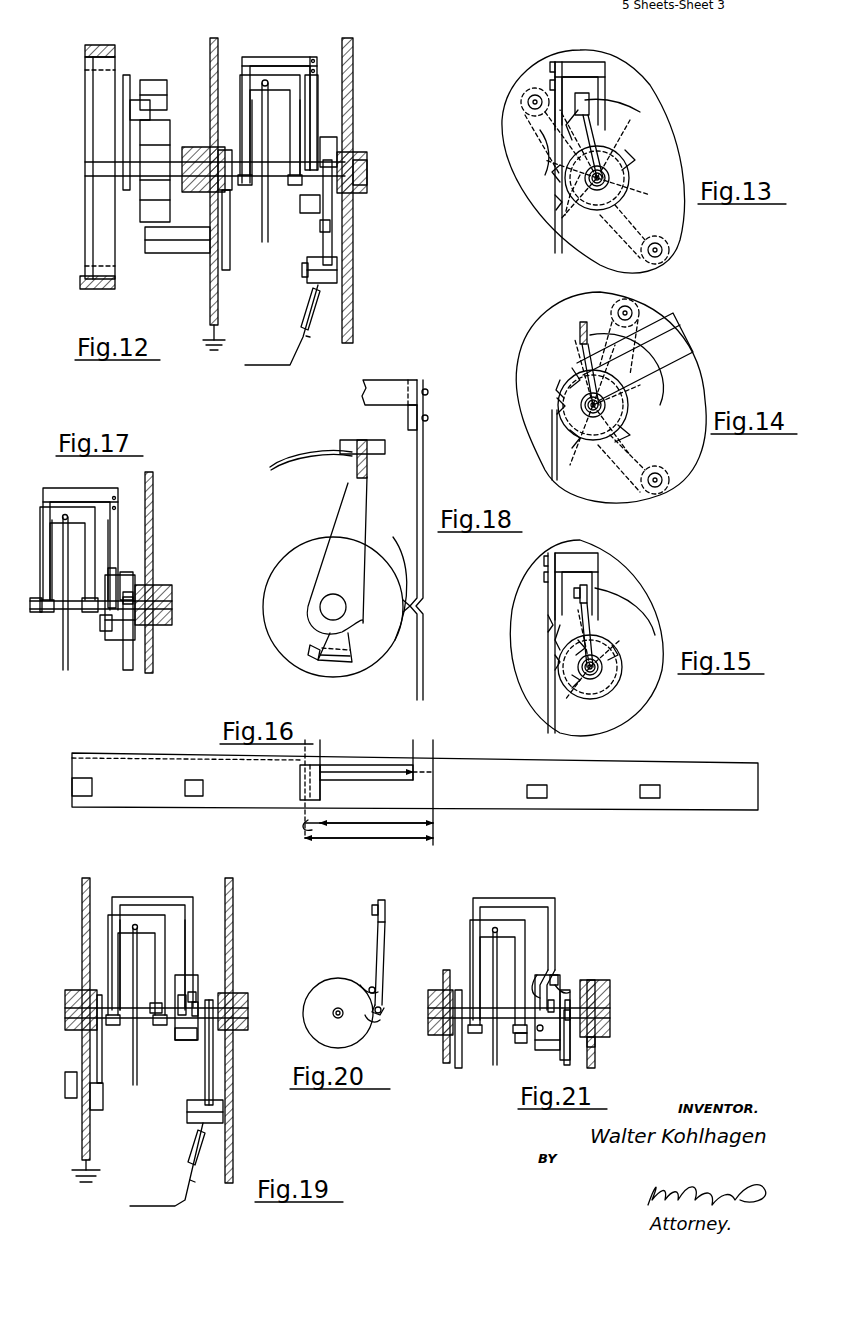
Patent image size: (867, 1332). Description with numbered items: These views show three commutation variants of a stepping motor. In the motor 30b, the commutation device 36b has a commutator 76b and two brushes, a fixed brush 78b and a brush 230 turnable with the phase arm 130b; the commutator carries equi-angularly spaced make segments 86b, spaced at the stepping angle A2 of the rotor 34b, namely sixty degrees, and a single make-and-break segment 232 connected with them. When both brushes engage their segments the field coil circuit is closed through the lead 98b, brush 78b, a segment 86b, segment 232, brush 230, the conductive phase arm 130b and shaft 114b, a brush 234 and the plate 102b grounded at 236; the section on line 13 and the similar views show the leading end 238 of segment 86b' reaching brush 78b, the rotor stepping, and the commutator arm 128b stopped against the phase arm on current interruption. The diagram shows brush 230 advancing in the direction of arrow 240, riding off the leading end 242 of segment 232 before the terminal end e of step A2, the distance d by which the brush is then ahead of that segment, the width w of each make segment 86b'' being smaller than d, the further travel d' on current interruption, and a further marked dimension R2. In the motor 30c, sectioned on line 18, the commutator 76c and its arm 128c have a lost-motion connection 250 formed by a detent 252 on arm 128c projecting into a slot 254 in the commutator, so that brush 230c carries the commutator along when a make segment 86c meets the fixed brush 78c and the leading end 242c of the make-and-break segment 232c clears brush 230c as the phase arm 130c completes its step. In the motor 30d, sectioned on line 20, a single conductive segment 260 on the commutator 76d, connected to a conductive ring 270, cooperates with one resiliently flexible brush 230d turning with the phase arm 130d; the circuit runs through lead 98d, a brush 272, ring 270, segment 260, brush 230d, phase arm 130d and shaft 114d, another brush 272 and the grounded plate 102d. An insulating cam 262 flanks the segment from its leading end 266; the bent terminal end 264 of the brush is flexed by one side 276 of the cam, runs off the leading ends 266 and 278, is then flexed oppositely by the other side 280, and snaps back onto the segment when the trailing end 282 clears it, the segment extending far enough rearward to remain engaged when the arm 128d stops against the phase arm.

In FIG. 12, the motor 30b is at (175, 45).
In FIG. 13, the motor 30b is at (665, 97).
In FIG. 14, the motor 30b is at (698, 330).
In FIG. 15, the motor 30b is at (660, 596).
In FIG. 12, the rotor 34b is at (110, 80).
In FIG. 12, the shaft 114b is at (195, 162).
In FIG. 12, the brush 234 is at (230, 225).
In FIG. 12, the plate 102b is at (218, 300).
In FIG. 12, the ground 236 is at (225, 342).
In FIG. 12, the phase arm 130b is at (245, 110).
In FIG. 13, the phase arm 130b is at (598, 70).
In FIG. 14, the phase arm 130b is at (682, 355).
In FIG. 15, the phase arm 130b is at (590, 560).
In FIG. 12, the commutator arm 128b is at (290, 80).
In FIG. 13, the commutator arm 128b is at (592, 97).
In FIG. 14, the commutator arm 128b is at (582, 340).
In FIG. 15, the commutator arm 128b is at (590, 612).
In FIG. 12, the make-and-break segment 232 is at (313, 108).
In FIG. 13, the make-and-break segment 232 is at (560, 174).
In FIG. 14, the make-and-break segment 232 is at (562, 386).
In FIG. 15, the make-and-break segment 232 is at (548, 622).
In FIG. 16, the make-and-break segment 232 is at (412, 745).
In FIG. 12, the brush 230 is at (313, 128).
In FIG. 13, the brush 230 is at (566, 125).
In FIG. 14, the brush 230 is at (600, 330).
In FIG. 15, the brush 230 is at (562, 628).
In FIG. 16, the brush 230 is at (322, 770).
In FIG. 12, the make segments 86b is at (357, 145).
In FIG. 13, the make segments 86b is at (614, 151).
In FIG. 14, the make segments 86b is at (603, 402).
In FIG. 15, the make segments 86b is at (589, 650).
In FIG. 16, the make segments 86b is at (381, 788).
In FIG. 12, the commutator 76b is at (300, 200).
In FIG. 13, the commutator 76b is at (630, 158).
In FIG. 14, the commutator 76b is at (628, 418).
In FIG. 15, the commutator 76b is at (658, 738).
In FIG. 16, the commutator 76b is at (676, 760).
In FIG. 12, the fixed brush 78b is at (335, 225).
In FIG. 13, the fixed brush 78b is at (556, 232).
In FIG. 14, the fixed brush 78b is at (552, 450).
In FIG. 15, the fixed brush 78b is at (552, 712).
In FIG. 16, the fixed brush 78b is at (320, 790).
In FIG. 12, the make segment 86b' is at (309, 232).
In FIG. 13, the make segment 86b' is at (522, 225).
In FIG. 14, the make segment 86b' is at (542, 405).
In FIG. 15, the make segment 86b' is at (536, 660).
In FIG. 16, the make segment 86b' is at (281, 795).
In FIG. 14, the make segment 86b'' is at (569, 465).
In FIG. 16, the make segment 86b'' is at (194, 811).
In FIG. 12, the commutation device 36b is at (310, 265).
In FIG. 13, the commutation device 36b is at (550, 186).
In FIG. 14, the commutation device 36b is at (552, 392).
In FIG. 15, the commutation device 36b is at (560, 688).
In FIG. 12, the lead 98b is at (275, 367).
In FIG. 12, the section line 13 is at (338, 40).
In FIG. 13, the stepping angle A2 is at (575, 150).
In FIG. 16, the stepping angle A2 is at (360, 828).
In FIG. 13, the leading end 238 is at (577, 206).
In FIG. 16, the leading end 238 is at (357, 790).
In FIG. 16, the arrow 240 is at (355, 765).
In FIG. 16, the leading end 242 is at (433, 770).
In FIG. 16, the distance d is at (436, 779).
In FIG. 16, the distance d' is at (291, 787).
In FIG. 16, the width w is at (314, 828).
In FIG. 16, the radius R2 is at (357, 840).
In FIG. 16, the terminal end e is at (433, 840).
In FIG. 17, the motor 30c is at (160, 470).
In FIG. 18, the motor 30c is at (268, 458).
In FIG. 17, the section line 18 is at (58, 482).
In FIG. 17, the phase arm 130c is at (66, 498).
In FIG. 18, the phase arm 130c is at (380, 390).
In FIG. 17, the commutator arm 128c is at (92, 530).
In FIG. 18, the commutator arm 128c is at (348, 507).
In FIG. 17, the brush 230c is at (115, 532).
In FIG. 18, the brush 230c is at (424, 484).
In FIG. 17, the commutator 76c is at (128, 563).
In FIG. 17, the leading end 242c is at (122, 572).
In FIG. 18, the leading end 242c is at (375, 555).
In FIG. 17, the make segment 86c is at (127, 582).
In FIG. 18, the make segment 86c is at (424, 614).
In FIG. 17, the make-and-break segment 232c is at (130, 598).
In FIG. 18, the make-and-break segment 232c is at (406, 588).
In FIG. 17, the detent 252 is at (108, 630).
In FIG. 18, the detent 252 is at (340, 662).
In FIG. 17, the fixed brush 78c is at (128, 655).
In FIG. 18, the fixed brush 78c is at (424, 673).
In FIG. 18, the slot 254 is at (312, 652).
In FIG. 18, the lost-motion connection 250 is at (318, 662).
In FIG. 19, the motor 30d is at (208, 878).
In FIG. 21, the motor 30d is at (562, 895).
In FIG. 19, the section line 20 is at (173, 874).
In FIG. 19, the shaft 114d is at (80, 1006).
In FIG. 21, the shaft 114d is at (435, 1032).
In FIG. 19, the grounded plate 102d is at (90, 1145).
In FIG. 21, the grounded plate 102d is at (446, 1065).
In FIG. 19, the phase arm 130d is at (182, 908).
In FIG. 20, the phase arm 130d is at (380, 905).
In FIG. 21, the phase arm 130d is at (490, 905).
In FIG. 19, the commutator arm 128d is at (156, 925).
In FIG. 21, the commutator arm 128d is at (512, 928).
In FIG. 19, the brush 272 is at (100, 1062).
In FIG. 21, the brush 272 is at (458, 1030).
In FIG. 19, the leading end 266 is at (192, 995).
In FIG. 20, the leading end 266 is at (340, 1003).
In FIG. 21, the leading end 266 is at (564, 965).
In FIG. 19, the commutator brush 230d is at (190, 1000).
In FIG. 20, the commutator brush 230d is at (386, 995).
In FIG. 21, the commutator brush 230d is at (553, 948).
In FIG. 19, the conductive segment 260 is at (182, 1000).
In FIG. 20, the conductive segment 260 is at (372, 988).
In FIG. 21, the conductive segment 260 is at (540, 1030).
In FIG. 19, the insulating cam 262 is at (195, 1005).
In FIG. 20, the insulating cam 262 is at (388, 1002).
In FIG. 21, the insulating cam 262 is at (570, 989).
In FIG. 19, the cam side 276 is at (178, 1000).
In FIG. 21, the cam side 276 is at (525, 1040).
In FIG. 19, the terminal end 264 is at (183, 1030).
In FIG. 20, the terminal end 264 is at (378, 1018).
In FIG. 21, the terminal end 264 is at (545, 977).
In FIG. 19, the commutator 76d is at (180, 1040).
In FIG. 20, the commutator 76d is at (325, 975).
In FIG. 21, the commutator 76d is at (560, 985).
In FIG. 19, the cam side 280 is at (207, 1060).
In FIG. 21, the cam side 280 is at (572, 998).
In FIG. 19, the trailing end 282 is at (205, 1080).
In FIG. 20, the trailing end 282 is at (383, 1010).
In FIG. 21, the trailing end 282 is at (596, 1046).
In FIG. 19, the lead 98d is at (155, 1207).
In FIG. 20, the leading end 278 is at (365, 985).
In FIG. 21, the leading end 278 is at (565, 990).
In FIG. 21, the conductive ring 270 is at (575, 1005).